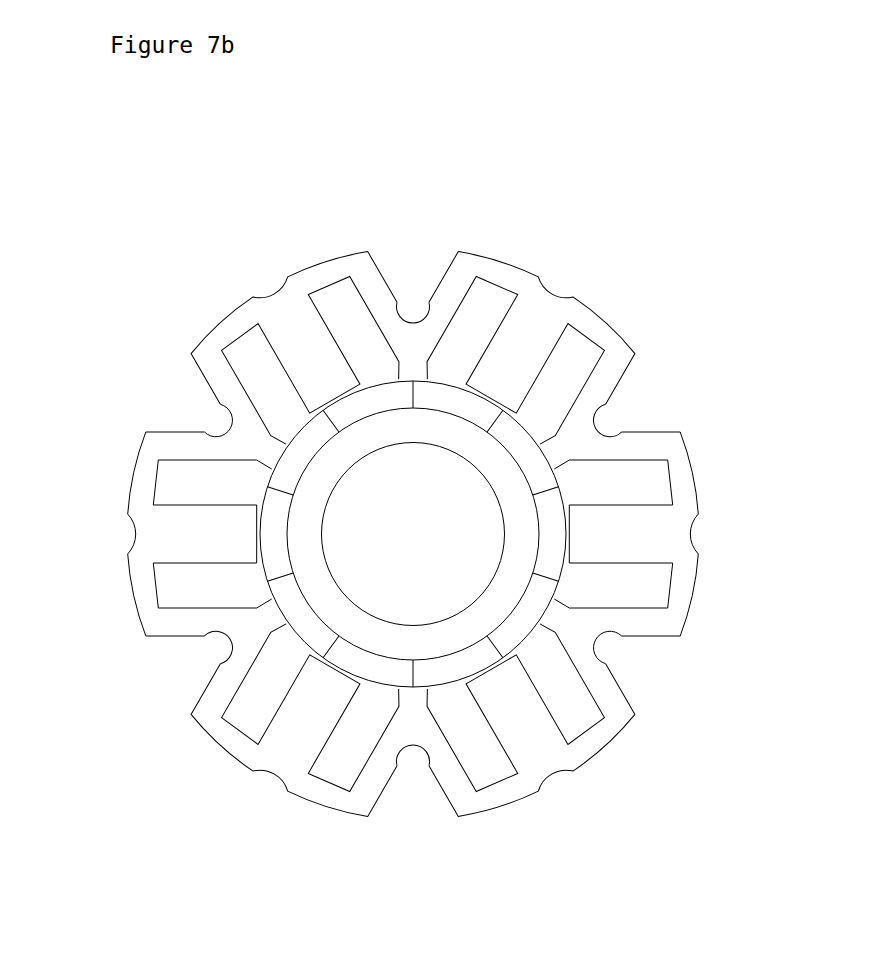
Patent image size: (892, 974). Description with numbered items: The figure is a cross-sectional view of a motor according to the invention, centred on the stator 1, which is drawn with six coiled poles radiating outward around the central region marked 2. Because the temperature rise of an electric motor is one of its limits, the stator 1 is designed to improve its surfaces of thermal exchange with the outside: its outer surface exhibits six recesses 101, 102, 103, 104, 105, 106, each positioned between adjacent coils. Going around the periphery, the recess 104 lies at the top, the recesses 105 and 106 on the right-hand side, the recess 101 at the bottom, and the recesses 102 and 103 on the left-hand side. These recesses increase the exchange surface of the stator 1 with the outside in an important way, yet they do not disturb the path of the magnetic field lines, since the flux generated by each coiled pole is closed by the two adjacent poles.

The stator 1 is at (122, 474).
The central hub ring 2 is at (478, 438).
The recess 101 is at (413, 760).
The recess 102 is at (212, 647).
The recess 103 is at (207, 422).
The recess 104 is at (412, 303).
The recess 105 is at (612, 420).
The recess 106 is at (612, 643).